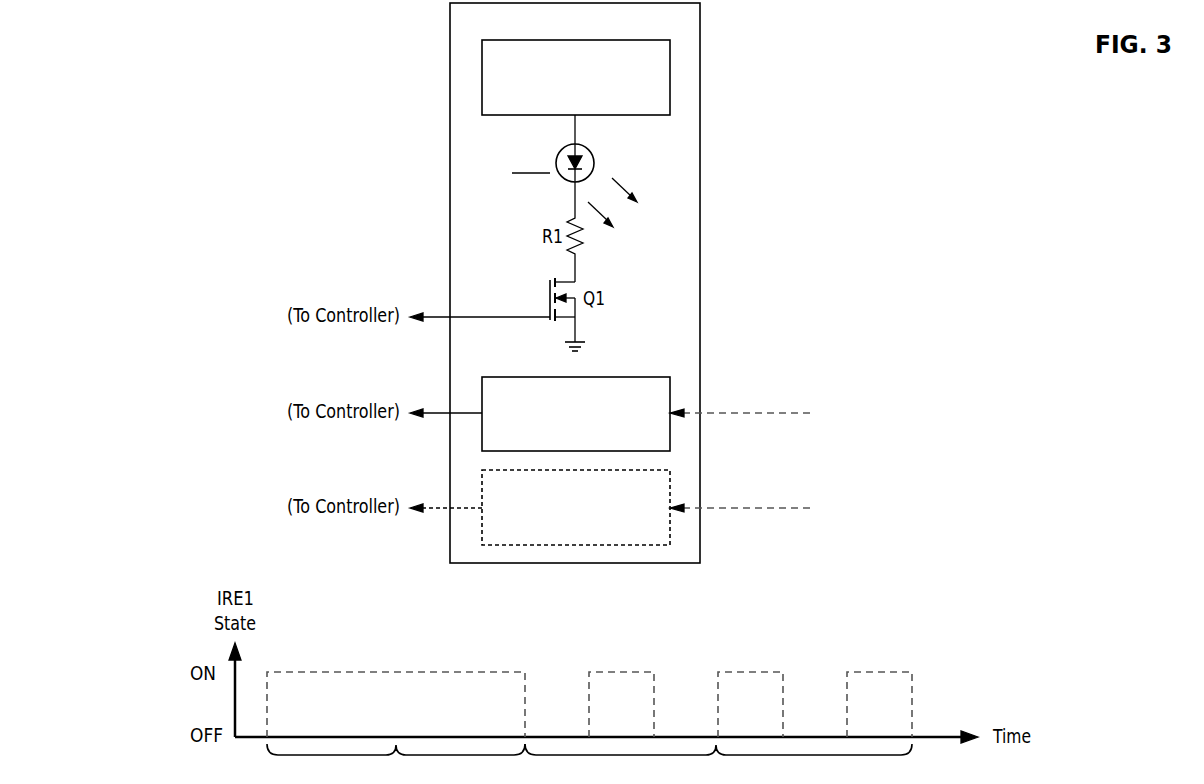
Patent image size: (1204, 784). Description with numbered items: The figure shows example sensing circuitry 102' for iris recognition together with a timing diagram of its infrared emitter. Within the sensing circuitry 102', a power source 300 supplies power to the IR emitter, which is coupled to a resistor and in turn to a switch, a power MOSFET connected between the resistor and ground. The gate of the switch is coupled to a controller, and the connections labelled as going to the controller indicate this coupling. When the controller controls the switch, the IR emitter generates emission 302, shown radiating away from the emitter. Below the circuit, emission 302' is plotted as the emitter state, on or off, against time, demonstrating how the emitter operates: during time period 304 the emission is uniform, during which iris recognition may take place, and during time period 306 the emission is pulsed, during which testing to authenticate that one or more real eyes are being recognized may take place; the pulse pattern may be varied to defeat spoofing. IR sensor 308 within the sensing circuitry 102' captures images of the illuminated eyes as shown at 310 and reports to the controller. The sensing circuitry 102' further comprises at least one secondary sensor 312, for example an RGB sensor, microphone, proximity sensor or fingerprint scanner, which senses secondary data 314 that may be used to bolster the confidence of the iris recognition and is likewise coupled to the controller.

The sensing circuitry 102' is at (575, 283).
The power source 300 is at (590, 100).
The emission 302 is at (680, 185).
The emission 302' is at (589, 689).
The time period 304 is at (396, 764).
The time period 306 is at (718, 764).
The IR sensor 308 is at (590, 436).
The captured images of illuminated eyes 310 is at (848, 424).
The secondary sensor 312 is at (590, 531).
The secondary data 314 is at (848, 519).